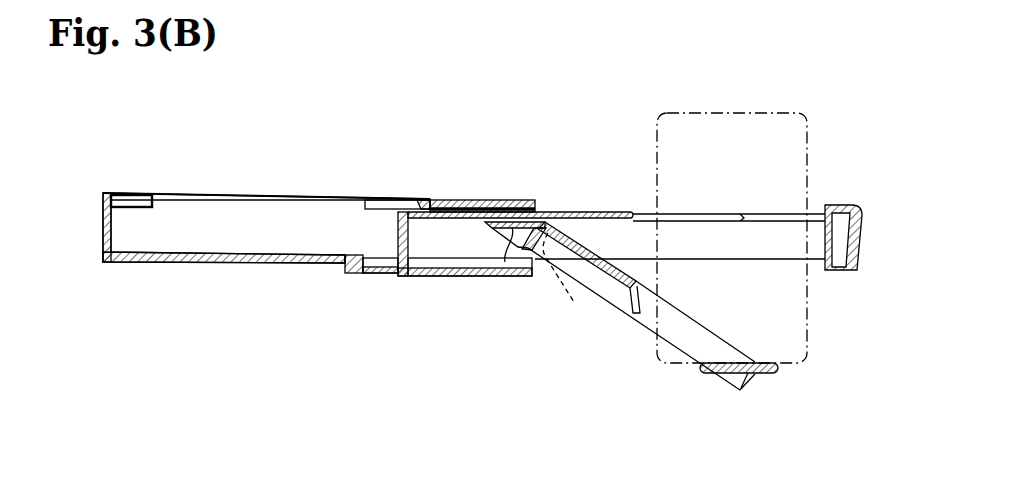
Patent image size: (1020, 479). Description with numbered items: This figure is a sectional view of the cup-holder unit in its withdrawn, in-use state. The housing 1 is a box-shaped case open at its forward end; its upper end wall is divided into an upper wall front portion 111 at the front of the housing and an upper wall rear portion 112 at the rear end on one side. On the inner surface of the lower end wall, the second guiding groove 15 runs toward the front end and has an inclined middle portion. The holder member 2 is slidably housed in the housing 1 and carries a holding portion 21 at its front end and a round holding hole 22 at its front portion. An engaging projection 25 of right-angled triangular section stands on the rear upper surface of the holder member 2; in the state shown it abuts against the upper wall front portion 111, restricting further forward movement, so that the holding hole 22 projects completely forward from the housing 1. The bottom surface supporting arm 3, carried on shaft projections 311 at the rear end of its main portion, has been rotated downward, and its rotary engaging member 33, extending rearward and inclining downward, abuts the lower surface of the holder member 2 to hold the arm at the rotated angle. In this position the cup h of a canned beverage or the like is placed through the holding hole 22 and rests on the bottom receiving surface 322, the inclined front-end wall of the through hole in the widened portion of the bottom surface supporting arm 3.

The housing 1 is at (252, 210).
The upper wall rear portion 112 is at (137, 195).
The engaging projection 25 is at (425, 202).
The upper wall front portion 111 is at (517, 207).
The second guiding groove 15 is at (426, 275).
The holder member 2 is at (598, 213).
The holding hole 22 is at (740, 219).
The rotary engaging member 33 is at (490, 275).
The holding portion 21 is at (865, 243).
The bottom surface supporting arm 3 is at (635, 322).
The shaft projections 311 is at (558, 282).
The bottom receiving surface 322 is at (713, 380).
The cup h is at (662, 113).